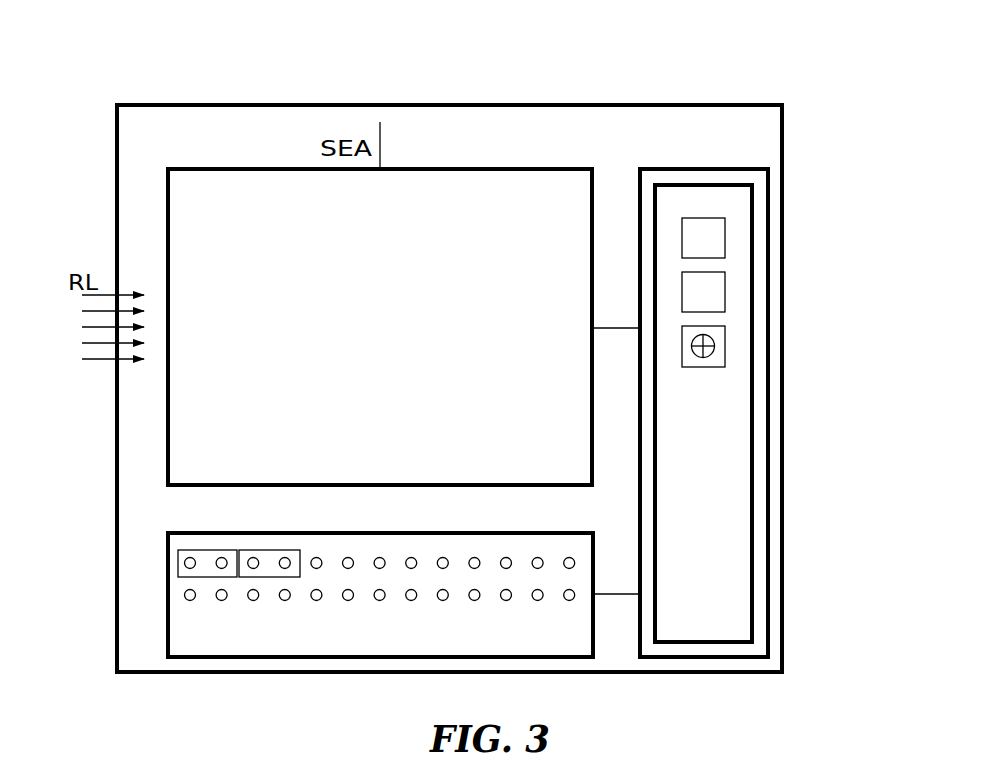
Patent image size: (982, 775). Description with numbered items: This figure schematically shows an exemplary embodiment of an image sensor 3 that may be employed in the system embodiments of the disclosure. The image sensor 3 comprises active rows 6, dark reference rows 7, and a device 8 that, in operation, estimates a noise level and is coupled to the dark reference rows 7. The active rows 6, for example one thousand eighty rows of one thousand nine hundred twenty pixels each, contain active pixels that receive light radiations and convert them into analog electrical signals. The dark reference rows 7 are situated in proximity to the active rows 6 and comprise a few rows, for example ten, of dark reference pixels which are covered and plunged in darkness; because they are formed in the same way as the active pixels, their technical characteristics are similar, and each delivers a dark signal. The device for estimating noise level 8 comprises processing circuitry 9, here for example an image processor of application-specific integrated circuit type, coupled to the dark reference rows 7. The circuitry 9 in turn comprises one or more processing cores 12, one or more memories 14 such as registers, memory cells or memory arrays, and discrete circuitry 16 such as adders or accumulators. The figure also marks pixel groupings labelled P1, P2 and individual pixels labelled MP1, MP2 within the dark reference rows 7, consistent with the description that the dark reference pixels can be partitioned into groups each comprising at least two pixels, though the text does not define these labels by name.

The image sensor 3 is at (455, 102).
The active rows 6 is at (565, 166).
The dark reference rows 7 is at (321, 566).
The device for estimating noise level 8 is at (742, 385).
The processing circuitry 9 is at (711, 425).
The processing cores 12 is at (725, 240).
The memories 14 is at (725, 293).
The discrete circuitry 16 is at (725, 346).
The first port group P1 is at (188, 557).
The second port group P2 is at (221, 557).
The first marked port MP1 is at (196, 580).
The second marked port MP2 is at (249, 580).